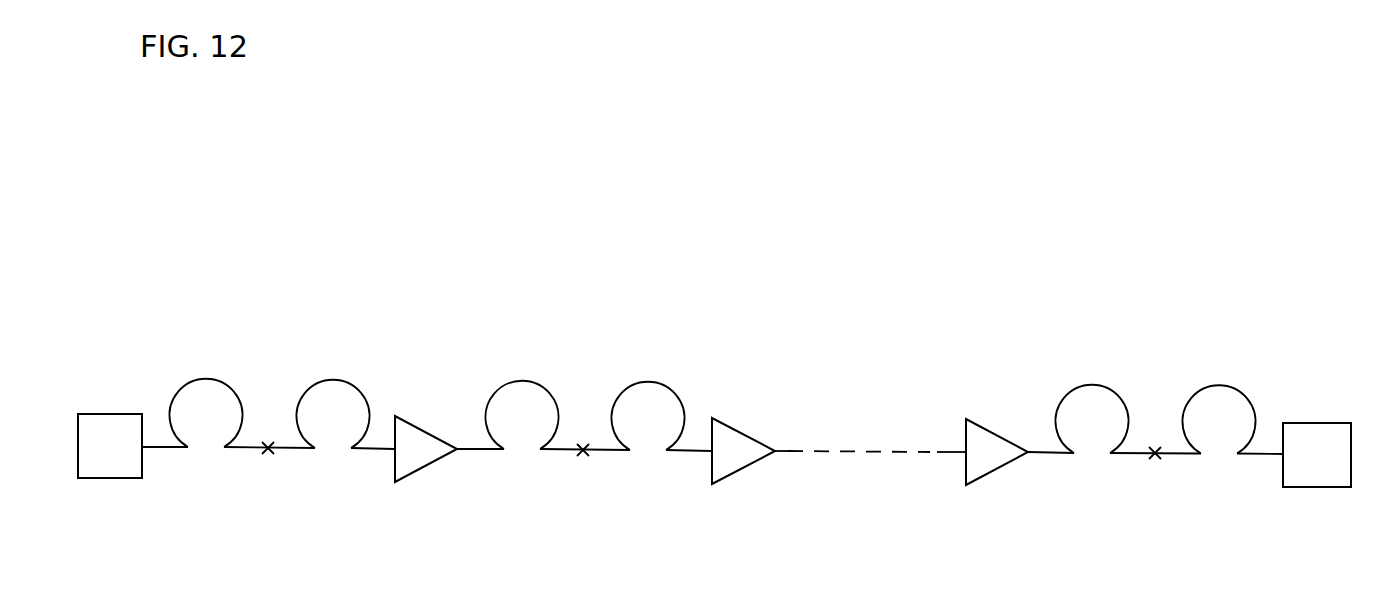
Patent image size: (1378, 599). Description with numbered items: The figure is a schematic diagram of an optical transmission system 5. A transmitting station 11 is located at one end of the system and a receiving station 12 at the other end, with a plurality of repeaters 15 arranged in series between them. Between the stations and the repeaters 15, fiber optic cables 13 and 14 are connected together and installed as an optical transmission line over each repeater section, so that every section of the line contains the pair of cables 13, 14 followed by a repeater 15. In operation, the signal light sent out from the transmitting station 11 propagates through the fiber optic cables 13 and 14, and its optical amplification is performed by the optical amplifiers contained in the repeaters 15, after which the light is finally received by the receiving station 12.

The optical transmission system 5 is at (752, 249).
The transmitting station 11 is at (108, 478).
The receiving station 12 is at (1317, 487).
The fiber optic cable 13 is at (204, 379).
The fiber optic cable 14 is at (331, 379).
The repeater 15 is at (419, 474).